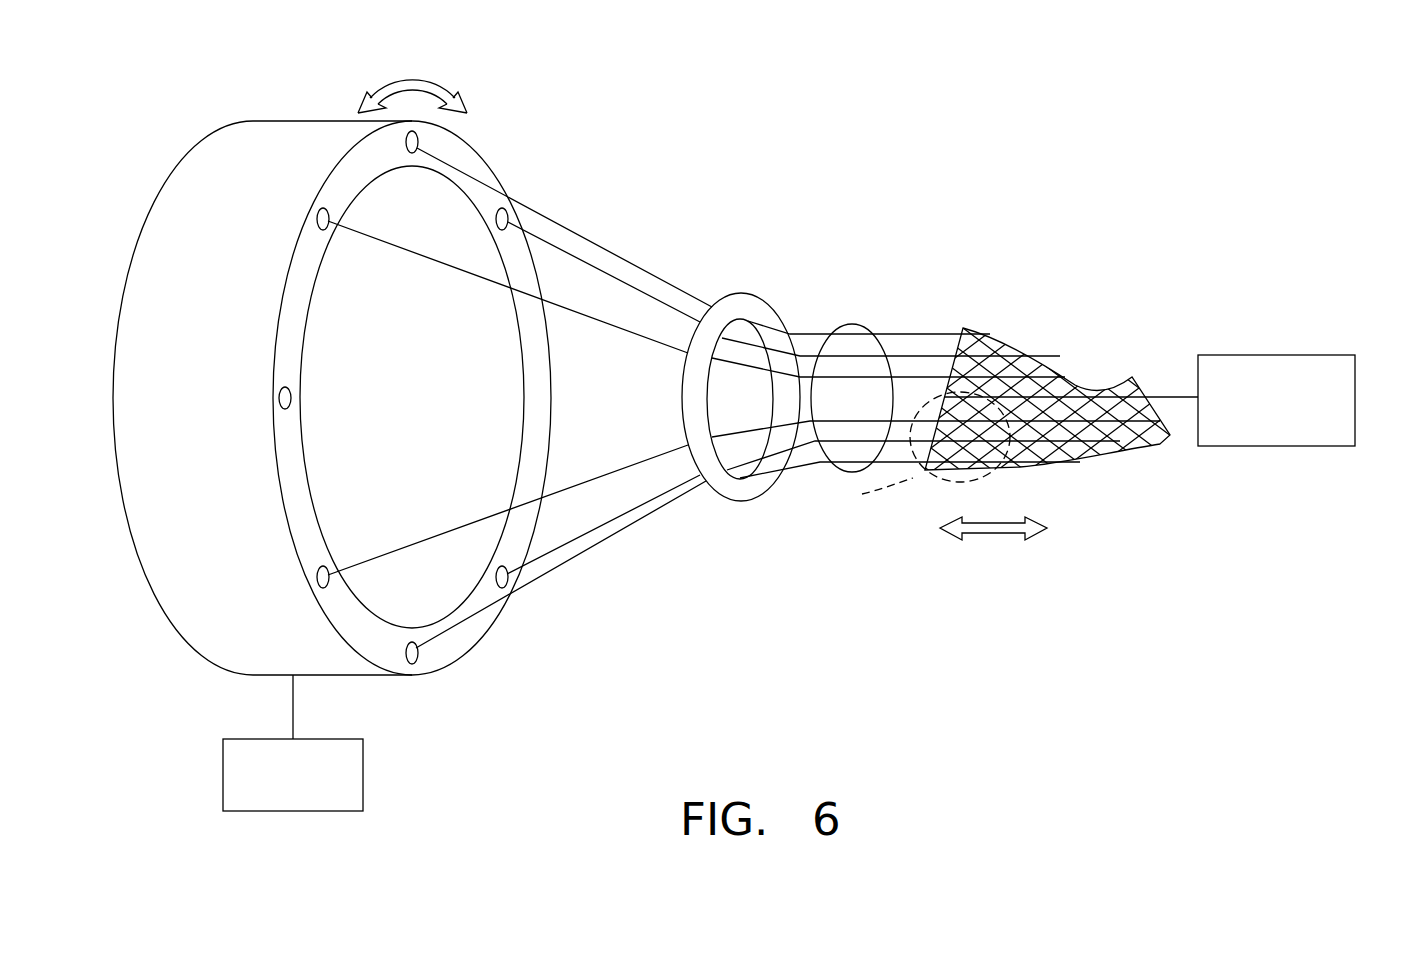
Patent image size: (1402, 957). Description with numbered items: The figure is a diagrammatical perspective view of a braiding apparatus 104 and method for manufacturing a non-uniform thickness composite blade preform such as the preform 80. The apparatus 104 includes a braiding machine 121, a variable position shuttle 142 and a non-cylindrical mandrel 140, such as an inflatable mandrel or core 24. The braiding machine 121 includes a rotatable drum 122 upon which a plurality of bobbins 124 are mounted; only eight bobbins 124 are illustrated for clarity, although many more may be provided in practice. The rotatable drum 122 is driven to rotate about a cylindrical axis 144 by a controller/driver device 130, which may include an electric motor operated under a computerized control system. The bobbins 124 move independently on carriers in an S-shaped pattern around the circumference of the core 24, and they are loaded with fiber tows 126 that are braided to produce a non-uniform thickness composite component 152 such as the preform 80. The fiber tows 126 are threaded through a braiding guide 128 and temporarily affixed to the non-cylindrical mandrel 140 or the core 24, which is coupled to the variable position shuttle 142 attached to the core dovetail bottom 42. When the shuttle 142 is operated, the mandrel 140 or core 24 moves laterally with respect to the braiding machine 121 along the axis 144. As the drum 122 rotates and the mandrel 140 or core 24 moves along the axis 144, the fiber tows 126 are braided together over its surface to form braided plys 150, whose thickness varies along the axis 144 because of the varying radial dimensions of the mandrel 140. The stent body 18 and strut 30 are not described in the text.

The stent body 18 is at (1053, 390).
The core 24 is at (1085, 449).
The stent strut 30 is at (1020, 458).
The core dovetail bottom 42 is at (1150, 396).
The preform 80 is at (1045, 383).
The braiding apparatus 104 is at (1086, 345).
The braiding machine 121 is at (744, 376).
The rotatable drum 122 is at (285, 121).
The bobbins 124 is at (419, 137).
The fiber tows 126 is at (603, 563).
The braiding guide 128 is at (717, 482).
The controller/driver device 130 is at (367, 776).
The non-cylindrical mandrel 140 is at (1053, 383).
The variable position shuttle 142 is at (1273, 447).
The cylindrical axis 144 is at (1003, 541).
The braided plys 150 is at (997, 337).
The non-uniform thickness composite component 152 is at (942, 485).